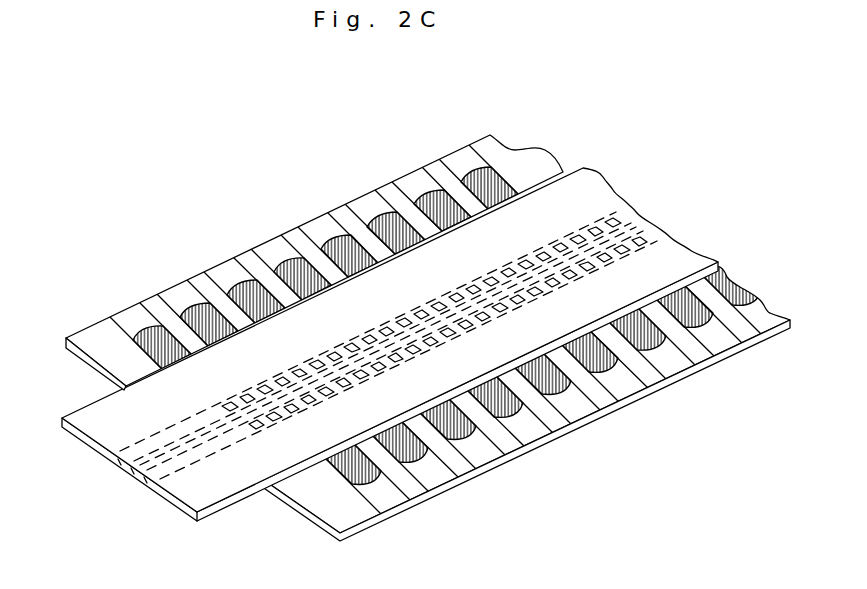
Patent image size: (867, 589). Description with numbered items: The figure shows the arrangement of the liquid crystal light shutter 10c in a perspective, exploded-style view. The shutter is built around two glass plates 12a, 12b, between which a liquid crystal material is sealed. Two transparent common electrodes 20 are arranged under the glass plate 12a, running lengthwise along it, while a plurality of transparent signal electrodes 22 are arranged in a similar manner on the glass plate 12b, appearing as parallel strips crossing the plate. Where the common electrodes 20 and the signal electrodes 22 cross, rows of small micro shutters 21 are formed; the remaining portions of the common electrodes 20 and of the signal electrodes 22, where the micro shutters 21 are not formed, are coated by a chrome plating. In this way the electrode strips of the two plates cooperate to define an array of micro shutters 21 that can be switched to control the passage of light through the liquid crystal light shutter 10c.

The liquid crystal light shutter 10c is at (426, 324).
The glass plate 12a is at (232, 497).
The glass plate 12b is at (375, 518).
The transparent common electrodes 20 is at (142, 482).
The micro shutters 21 is at (595, 234).
The transparent signal electrodes 22 is at (425, 172).